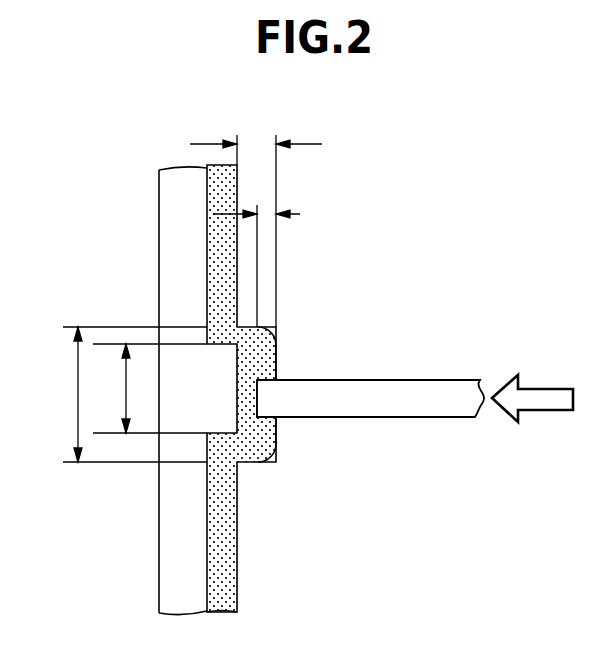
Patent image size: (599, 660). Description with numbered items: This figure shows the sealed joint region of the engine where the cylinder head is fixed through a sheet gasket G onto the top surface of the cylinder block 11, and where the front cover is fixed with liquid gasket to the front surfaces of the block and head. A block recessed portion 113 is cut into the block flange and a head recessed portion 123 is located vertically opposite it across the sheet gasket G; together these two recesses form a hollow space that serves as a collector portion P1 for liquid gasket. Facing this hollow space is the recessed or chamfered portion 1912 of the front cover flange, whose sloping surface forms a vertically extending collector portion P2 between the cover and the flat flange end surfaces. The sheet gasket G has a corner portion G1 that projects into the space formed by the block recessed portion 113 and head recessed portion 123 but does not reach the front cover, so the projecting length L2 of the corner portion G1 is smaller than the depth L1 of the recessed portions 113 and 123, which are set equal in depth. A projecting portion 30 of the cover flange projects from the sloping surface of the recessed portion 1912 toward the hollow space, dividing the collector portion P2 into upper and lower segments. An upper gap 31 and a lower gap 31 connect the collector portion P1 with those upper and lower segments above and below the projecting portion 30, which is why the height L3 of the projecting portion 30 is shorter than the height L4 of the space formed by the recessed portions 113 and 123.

The cylinder block 11 is at (297, 482).
The projecting portion 30 is at (223, 398).
The gap 31 is at (232, 333).
The block recessed portion 113 is at (275, 452).
The head recessed portion 123 is at (277, 332).
The recessed portion of front cover 1912 is at (237, 592).
The collector portion P1 is at (277, 343).
The collector portion P2 is at (207, 533).
The sheet gasket G is at (443, 392).
The corner portion of sheet gasket G1 is at (263, 393).
The depth of recessed portions L1 is at (256, 225).
The length of projecting gasket portion L2 is at (256, 257).
The height of projecting portion L3 is at (150, 388).
The height of recessed space L4 is at (127, 394).